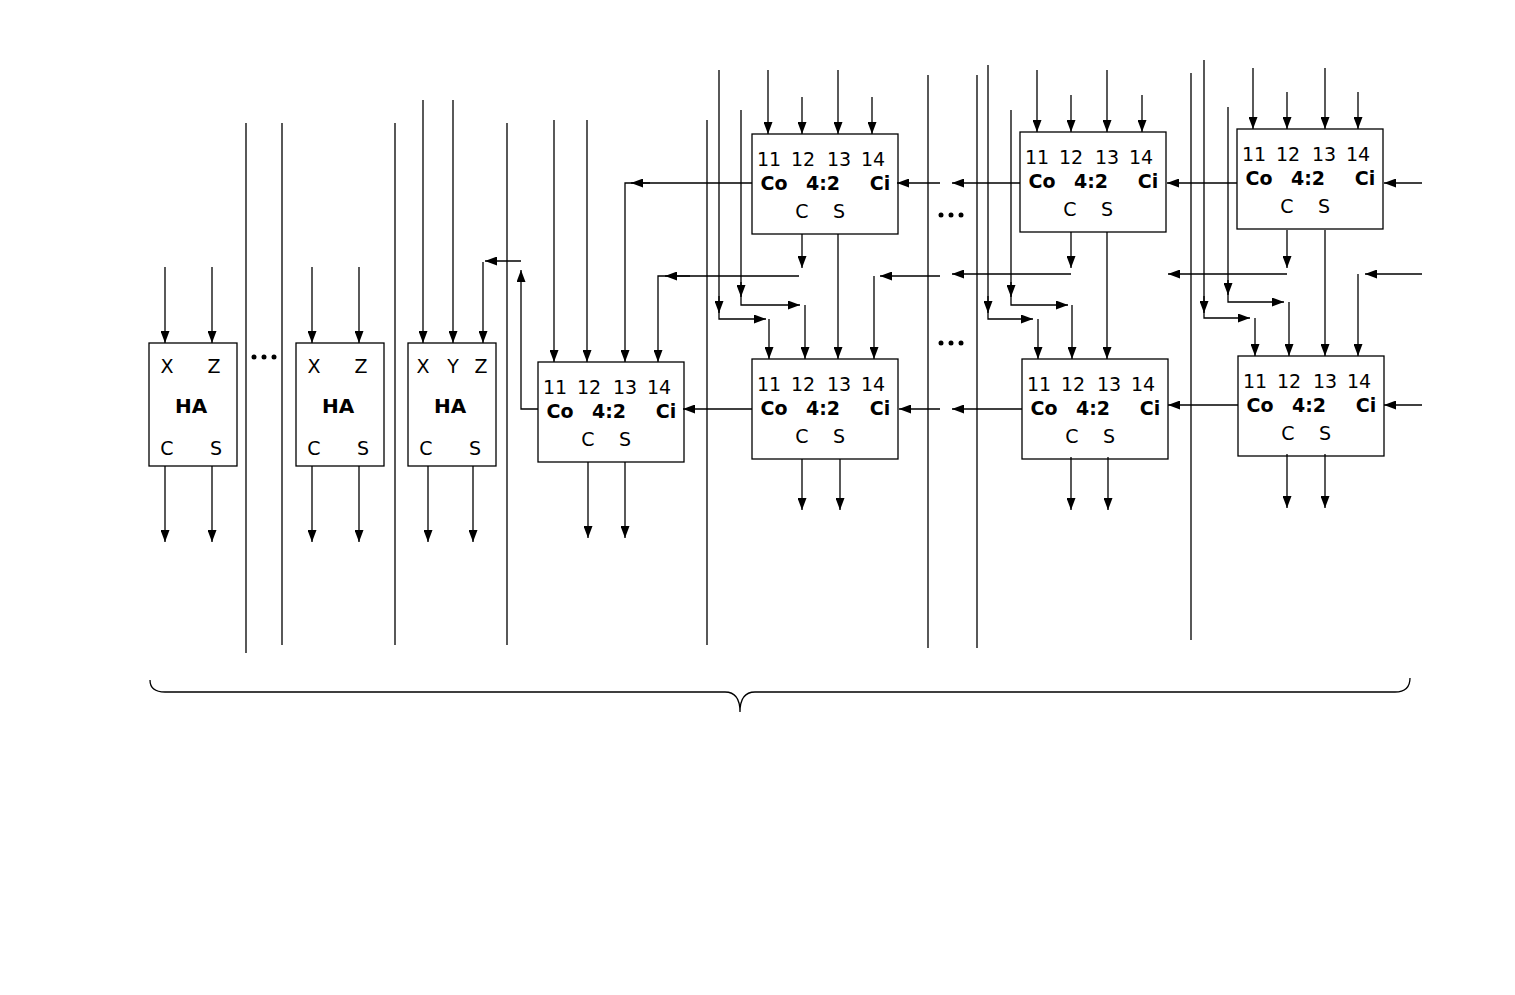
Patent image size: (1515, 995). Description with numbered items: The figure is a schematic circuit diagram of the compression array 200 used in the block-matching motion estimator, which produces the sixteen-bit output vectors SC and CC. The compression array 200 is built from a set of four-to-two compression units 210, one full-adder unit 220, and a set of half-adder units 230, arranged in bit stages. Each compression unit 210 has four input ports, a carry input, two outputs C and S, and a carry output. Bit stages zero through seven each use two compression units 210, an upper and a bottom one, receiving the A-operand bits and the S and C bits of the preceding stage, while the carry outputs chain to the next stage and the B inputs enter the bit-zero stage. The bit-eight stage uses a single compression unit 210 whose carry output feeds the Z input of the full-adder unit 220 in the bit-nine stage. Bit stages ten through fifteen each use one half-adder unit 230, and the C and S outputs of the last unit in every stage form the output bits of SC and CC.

The compression array 200 is at (829, 441).
The 4:2 compression unit 210 is at (640, 362).
The full-adder unit 220 is at (467, 343).
The half-adder unit 230 is at (195, 343).